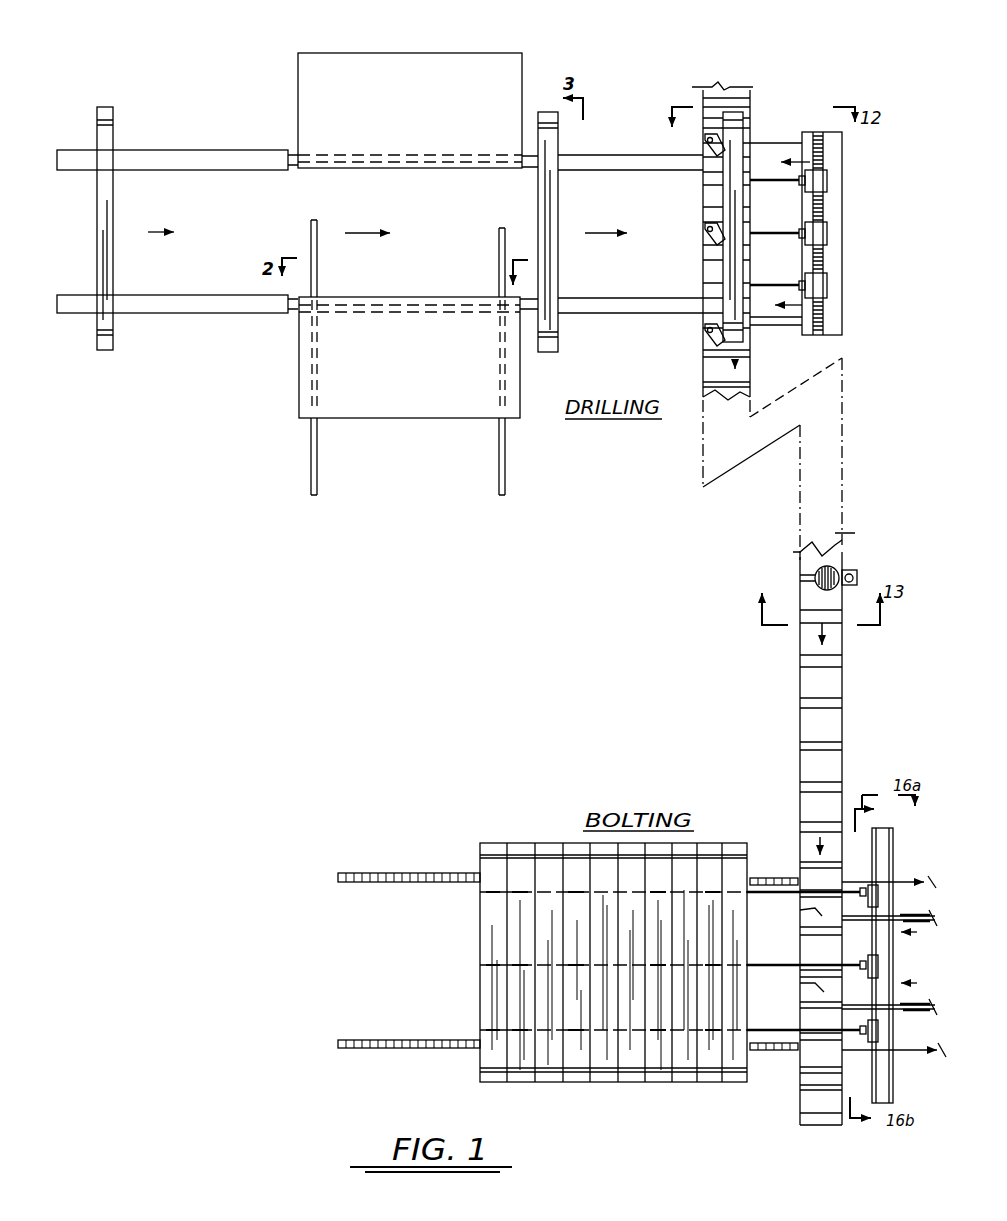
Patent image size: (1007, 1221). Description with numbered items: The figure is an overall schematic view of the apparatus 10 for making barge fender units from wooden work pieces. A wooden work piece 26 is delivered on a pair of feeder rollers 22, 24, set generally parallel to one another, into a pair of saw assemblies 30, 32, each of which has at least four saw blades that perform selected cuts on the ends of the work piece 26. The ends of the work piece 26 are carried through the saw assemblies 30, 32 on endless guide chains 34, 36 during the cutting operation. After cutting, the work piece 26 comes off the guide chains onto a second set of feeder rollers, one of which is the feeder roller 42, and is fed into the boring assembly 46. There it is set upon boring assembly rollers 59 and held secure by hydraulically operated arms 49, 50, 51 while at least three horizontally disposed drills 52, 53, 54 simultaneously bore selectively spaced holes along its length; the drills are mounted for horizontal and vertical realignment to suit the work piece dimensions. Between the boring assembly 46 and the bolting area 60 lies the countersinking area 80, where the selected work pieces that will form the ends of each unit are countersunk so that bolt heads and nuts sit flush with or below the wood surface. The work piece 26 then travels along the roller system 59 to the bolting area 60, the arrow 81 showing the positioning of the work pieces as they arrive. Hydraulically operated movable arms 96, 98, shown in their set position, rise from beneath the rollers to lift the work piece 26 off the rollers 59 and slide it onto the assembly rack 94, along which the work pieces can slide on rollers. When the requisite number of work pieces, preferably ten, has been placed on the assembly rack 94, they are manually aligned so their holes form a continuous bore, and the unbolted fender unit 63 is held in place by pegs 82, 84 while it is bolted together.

The apparatus 10 is at (610, 697).
The feeder roller 22 is at (157, 149).
The feeder roller 24 is at (173, 295).
The work piece 26 is at (97, 192).
The saw assembly 30 is at (440, 68).
The saw assembly 32 is at (318, 348).
The endless guide chain 34 is at (442, 158).
The endless guide chain 36 is at (433, 305).
The feeder roller 42 is at (605, 155).
The boring assembly 46 is at (782, 76).
The arm 49 is at (708, 152).
The arm 50 is at (703, 233).
The arm 51 is at (703, 338).
The drill 52 is at (828, 183).
The drill 53 is at (823, 236).
The drill 54 is at (822, 288).
The boring assembly rollers 59 is at (702, 247).
The bolting area 60 is at (786, 797).
The fender unit 63 is at (548, 852).
The countersinking area 80 is at (851, 553).
The arrow 81 is at (783, 944).
The peg 82 is at (478, 868).
The peg 84 is at (476, 1038).
The assembly rack 94 is at (362, 884).
The movable arm 96 is at (812, 910).
The movable arm 98 is at (812, 983).